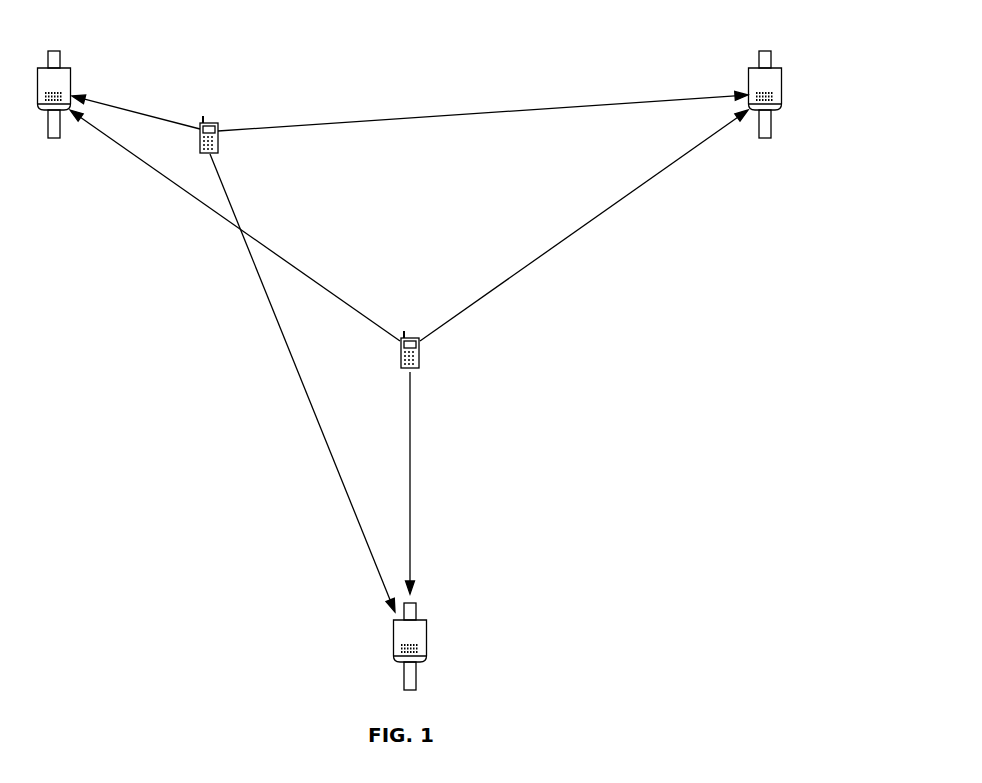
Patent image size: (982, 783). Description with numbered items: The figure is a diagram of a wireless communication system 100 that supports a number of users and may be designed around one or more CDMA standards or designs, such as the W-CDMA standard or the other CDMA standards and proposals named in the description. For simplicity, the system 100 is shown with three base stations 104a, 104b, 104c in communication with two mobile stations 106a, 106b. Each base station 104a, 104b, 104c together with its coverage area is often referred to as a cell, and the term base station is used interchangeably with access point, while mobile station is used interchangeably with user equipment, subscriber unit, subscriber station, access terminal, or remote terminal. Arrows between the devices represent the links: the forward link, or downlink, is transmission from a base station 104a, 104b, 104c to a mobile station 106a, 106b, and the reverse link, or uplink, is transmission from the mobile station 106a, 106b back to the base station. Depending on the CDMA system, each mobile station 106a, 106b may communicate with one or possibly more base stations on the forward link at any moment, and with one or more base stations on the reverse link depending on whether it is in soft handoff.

The wireless communication system 100 is at (894, 54).
The base station 104a is at (61, 64).
The base station 104b is at (773, 64).
The base station 104c is at (418, 616).
The mobile station 106a is at (208, 120).
The mobile station 106b is at (400, 372).